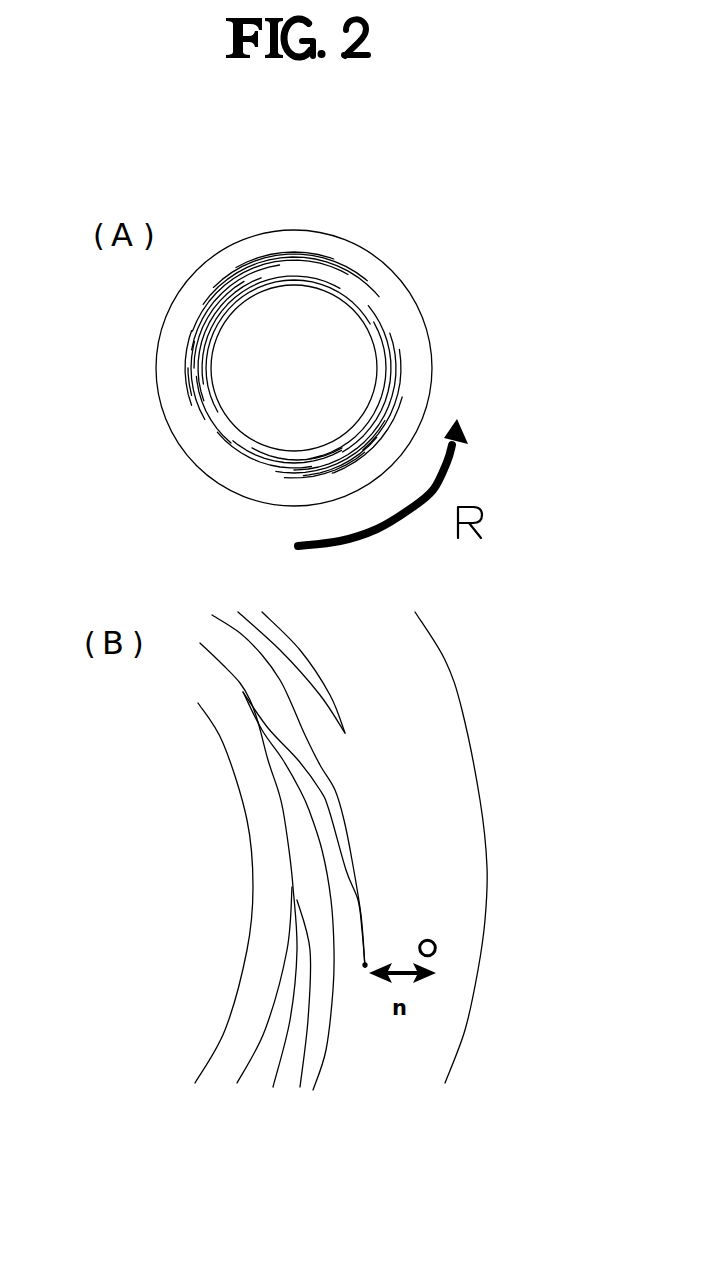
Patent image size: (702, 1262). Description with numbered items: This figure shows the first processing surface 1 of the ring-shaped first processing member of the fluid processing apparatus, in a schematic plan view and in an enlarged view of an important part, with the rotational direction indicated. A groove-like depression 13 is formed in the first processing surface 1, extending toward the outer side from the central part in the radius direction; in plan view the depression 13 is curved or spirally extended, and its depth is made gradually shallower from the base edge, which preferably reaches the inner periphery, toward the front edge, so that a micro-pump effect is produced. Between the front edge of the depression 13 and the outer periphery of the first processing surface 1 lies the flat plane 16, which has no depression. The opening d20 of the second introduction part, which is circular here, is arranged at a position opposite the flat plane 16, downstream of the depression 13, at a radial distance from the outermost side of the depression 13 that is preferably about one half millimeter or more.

The first processing surface 1 is at (200, 446).
The depression 13 is at (196, 392).
The flat plane 16 is at (380, 712).
The opening of the second introduction part d20 is at (432, 938).